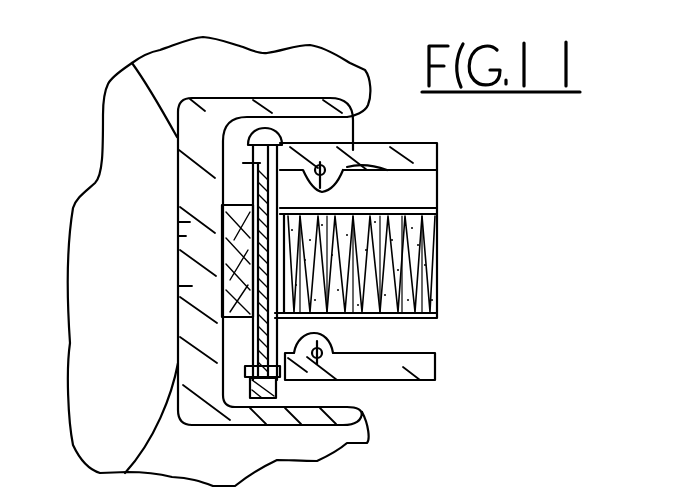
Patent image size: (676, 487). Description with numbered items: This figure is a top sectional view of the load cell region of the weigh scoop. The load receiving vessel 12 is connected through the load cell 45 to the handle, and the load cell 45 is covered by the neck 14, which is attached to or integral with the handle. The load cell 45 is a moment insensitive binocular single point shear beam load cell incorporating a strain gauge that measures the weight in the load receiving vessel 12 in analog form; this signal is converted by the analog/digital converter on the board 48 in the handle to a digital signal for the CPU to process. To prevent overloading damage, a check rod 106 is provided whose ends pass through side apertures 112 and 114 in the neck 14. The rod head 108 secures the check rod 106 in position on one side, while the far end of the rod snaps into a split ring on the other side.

The load receiving vessel 12 is at (160, 303).
The neck 14 is at (355, 354).
The load cell 45 is at (417, 288).
The board 48 is at (283, 386).
The check rod 106 is at (247, 186).
The rod head 108 is at (280, 133).
The side aperture 112 is at (249, 154).
The side aperture 114 is at (247, 368).